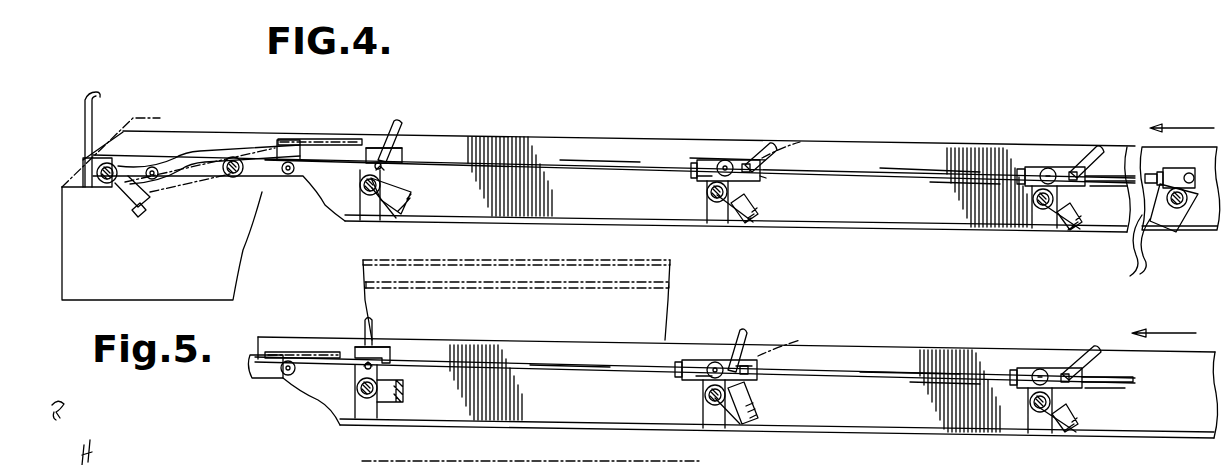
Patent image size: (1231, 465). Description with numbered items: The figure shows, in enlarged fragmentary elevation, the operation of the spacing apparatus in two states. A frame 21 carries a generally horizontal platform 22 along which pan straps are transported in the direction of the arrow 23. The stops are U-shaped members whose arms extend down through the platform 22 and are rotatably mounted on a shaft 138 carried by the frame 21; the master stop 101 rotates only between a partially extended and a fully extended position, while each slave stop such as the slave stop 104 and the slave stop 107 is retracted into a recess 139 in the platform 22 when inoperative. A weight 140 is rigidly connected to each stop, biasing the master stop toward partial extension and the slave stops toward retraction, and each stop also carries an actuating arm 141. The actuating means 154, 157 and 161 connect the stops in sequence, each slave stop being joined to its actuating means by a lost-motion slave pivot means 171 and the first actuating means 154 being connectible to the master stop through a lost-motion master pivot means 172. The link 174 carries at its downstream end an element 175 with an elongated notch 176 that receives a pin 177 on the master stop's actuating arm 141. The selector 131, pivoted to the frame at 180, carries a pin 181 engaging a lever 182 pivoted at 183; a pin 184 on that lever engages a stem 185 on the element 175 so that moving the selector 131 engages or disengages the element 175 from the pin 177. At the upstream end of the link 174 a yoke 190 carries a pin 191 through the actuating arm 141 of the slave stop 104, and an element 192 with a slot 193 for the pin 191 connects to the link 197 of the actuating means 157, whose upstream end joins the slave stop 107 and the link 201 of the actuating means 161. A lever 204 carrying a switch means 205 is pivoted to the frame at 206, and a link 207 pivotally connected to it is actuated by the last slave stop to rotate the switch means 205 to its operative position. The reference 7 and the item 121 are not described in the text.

In FIG. 4, the detail section indicator 7 is at (733, 142).
In FIG. 4, the frame 21 is at (343, 221).
In FIG. 5, the frame 21 is at (350, 432).
In FIG. 4, the platform 22 is at (610, 136).
In FIG. 5, the platform 22 is at (874, 340).
In FIG. 4, the arrow 23 is at (1188, 130).
In FIG. 5, the arrow 23 is at (1184, 330).
In FIG. 4, the master stop 101 is at (404, 128).
In FIG. 5, the master stop 101 is at (362, 326).
In FIG. 4, the slave stop 104 is at (770, 142).
In FIG. 5, the slave stop 104 is at (742, 332).
In FIG. 4, the slave stop 107 is at (1096, 150).
In FIG. 5, the slave stop 107 is at (1092, 350).
In FIG. 5, the hopper 121 is at (672, 310).
In FIG. 4, the selector 131 is at (95, 95).
In FIG. 4, the shaft 138 is at (708, 196).
In FIG. 5, the shaft 138 is at (710, 398).
In FIG. 4, the recess 139 is at (772, 140).
In FIG. 5, the recess 139 is at (770, 352).
In FIG. 4, the weight 140 is at (404, 214).
In FIG. 5, the weight 140 is at (404, 392).
In FIG. 4, the actuating arm 141 is at (392, 182).
In FIG. 5, the actuating arm 141 is at (358, 380).
In FIG. 4, the actuating means 154 is at (580, 180).
In FIG. 5, the actuating means 154 is at (552, 380).
In FIG. 4, the actuating means 157 is at (937, 166).
In FIG. 5, the actuating means 157 is at (911, 368).
In FIG. 4, the actuating means 161 is at (1124, 158).
In FIG. 5, the actuating means 161 is at (1138, 374).
In FIG. 4, the lost-motion slave pivot means 171 is at (744, 156).
In FIG. 5, the lost-motion slave pivot means 171 is at (877, 373).
In FIG. 4, the lost-motion master pivot means 172 is at (388, 125).
In FIG. 5, the lost-motion master pivot means 172 is at (383, 342).
In FIG. 4, the link 174 is at (505, 144).
In FIG. 5, the link 174 is at (516, 352).
In FIG. 4, the element 175 is at (404, 152).
In FIG. 5, the element 175 is at (392, 356).
In FIG. 4, the notch 176 is at (384, 166).
In FIG. 5, the notch 176 is at (376, 366).
In FIG. 4, the pin 177 is at (366, 168).
In FIG. 5, the pin 177 is at (360, 376).
In FIG. 4, the pivotal connection 180 is at (103, 188).
In FIG. 4, the pin 181 is at (152, 166).
In FIG. 4, the lever 182 is at (175, 182).
In FIG. 5, the lever 182 is at (262, 380).
In FIG. 4, the pivotal connection 183 is at (233, 180).
In FIG. 4, the pin 184 is at (288, 178).
In FIG. 5, the pin 184 is at (282, 378).
In FIG. 4, the stem 185 is at (312, 138).
In FIG. 5, the stem 185 is at (278, 350).
In FIG. 4, the yoke 190 is at (706, 158).
In FIG. 5, the yoke 190 is at (682, 366).
In FIG. 4, the pin 191 is at (712, 180).
In FIG. 5, the pin 191 is at (712, 372).
In FIG. 4, the element 192 is at (752, 168).
In FIG. 5, the element 192 is at (752, 374).
In FIG. 4, the slot 193 is at (758, 178).
In FIG. 5, the slot 193 is at (758, 366).
In FIG. 4, the link 197 is at (950, 185).
In FIG. 5, the link 197 is at (938, 385).
In FIG. 4, the link 201 is at (1116, 185).
In FIG. 5, the link 201 is at (1120, 386).
In FIG. 4, the lever 204 is at (1178, 212).
In FIG. 4, the switch means 205 is at (1180, 248).
In FIG. 4, the pivotal connection 206 is at (1190, 174).
In FIG. 4, the link 207 is at (1145, 176).